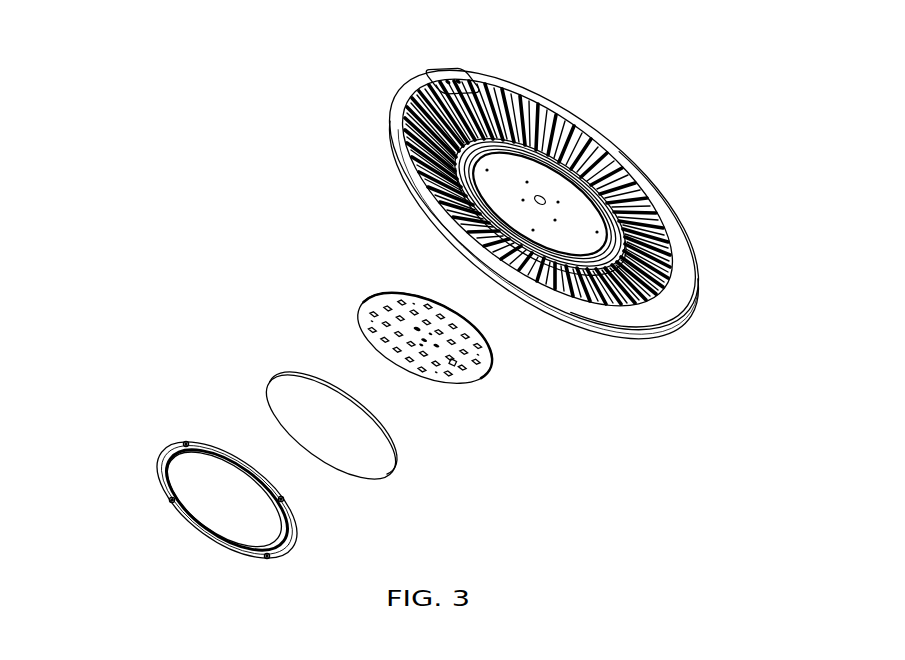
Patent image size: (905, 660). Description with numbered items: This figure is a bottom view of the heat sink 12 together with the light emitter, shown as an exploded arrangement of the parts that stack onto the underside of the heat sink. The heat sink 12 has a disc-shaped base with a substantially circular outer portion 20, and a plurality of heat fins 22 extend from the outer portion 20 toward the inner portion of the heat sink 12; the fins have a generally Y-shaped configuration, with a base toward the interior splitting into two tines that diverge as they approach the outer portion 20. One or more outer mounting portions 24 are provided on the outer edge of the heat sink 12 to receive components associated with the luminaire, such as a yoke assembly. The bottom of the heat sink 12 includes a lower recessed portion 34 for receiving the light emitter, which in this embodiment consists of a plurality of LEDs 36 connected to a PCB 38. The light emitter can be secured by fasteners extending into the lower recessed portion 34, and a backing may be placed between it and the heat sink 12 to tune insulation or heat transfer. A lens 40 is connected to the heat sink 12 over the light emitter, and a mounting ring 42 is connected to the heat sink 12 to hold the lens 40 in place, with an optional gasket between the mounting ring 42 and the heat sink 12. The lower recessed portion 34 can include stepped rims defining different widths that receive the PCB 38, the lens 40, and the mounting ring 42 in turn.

The heat sink 12 is at (636, 148).
The outer portion 20 is at (675, 223).
The heat fins 22 is at (641, 316).
The outer mounting portion 24 is at (466, 82).
The lower recessed portion 34 is at (524, 170).
The LEDs 36 is at (456, 366).
The PCB 38 is at (376, 307).
The lens 40 is at (283, 393).
The mounting ring 42 is at (177, 449).